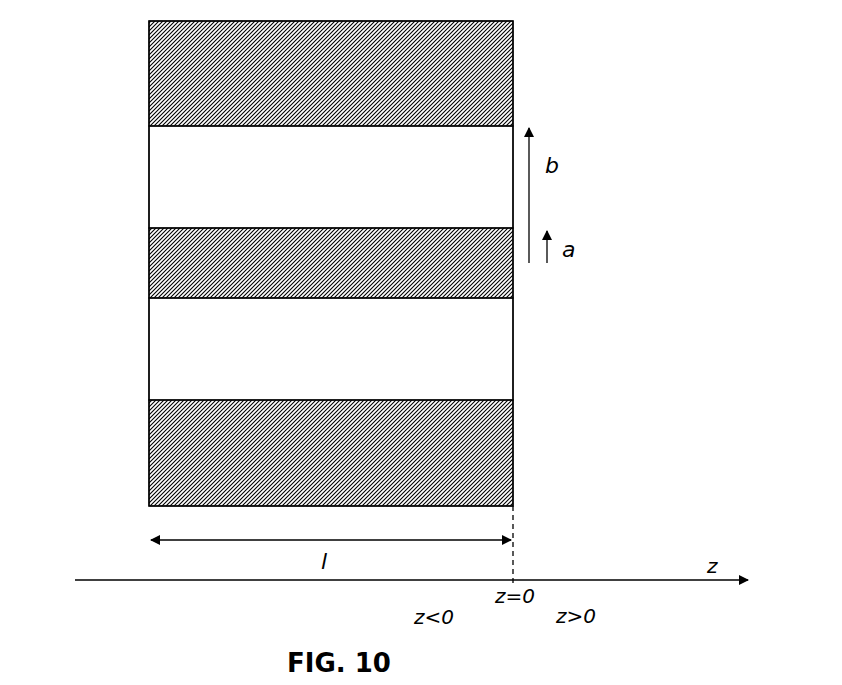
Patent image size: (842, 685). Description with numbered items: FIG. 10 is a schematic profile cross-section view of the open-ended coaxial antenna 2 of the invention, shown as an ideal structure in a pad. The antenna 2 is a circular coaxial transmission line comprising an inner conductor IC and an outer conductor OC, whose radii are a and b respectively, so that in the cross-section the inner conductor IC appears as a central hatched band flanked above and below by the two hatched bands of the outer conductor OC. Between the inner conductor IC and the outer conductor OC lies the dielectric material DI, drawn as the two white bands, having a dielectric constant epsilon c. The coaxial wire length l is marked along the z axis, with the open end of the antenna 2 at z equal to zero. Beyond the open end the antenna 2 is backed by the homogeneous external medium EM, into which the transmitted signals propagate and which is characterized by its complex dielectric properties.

The waveguide structure 2 is at (326, 268).
The dielectric material DI is at (153, 183).
The inner conductor IC is at (493, 280).
The outer conductor OC is at (510, 455).
The external medium EM is at (579, 65).